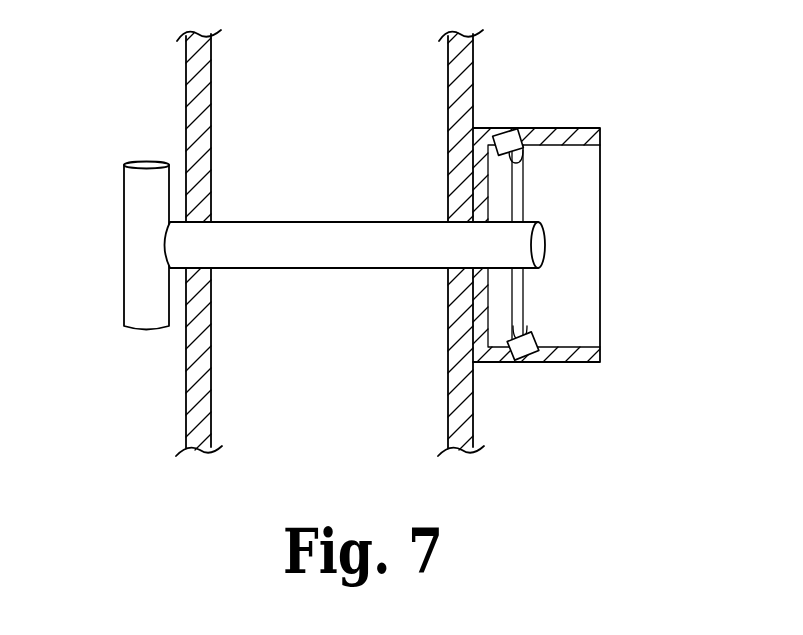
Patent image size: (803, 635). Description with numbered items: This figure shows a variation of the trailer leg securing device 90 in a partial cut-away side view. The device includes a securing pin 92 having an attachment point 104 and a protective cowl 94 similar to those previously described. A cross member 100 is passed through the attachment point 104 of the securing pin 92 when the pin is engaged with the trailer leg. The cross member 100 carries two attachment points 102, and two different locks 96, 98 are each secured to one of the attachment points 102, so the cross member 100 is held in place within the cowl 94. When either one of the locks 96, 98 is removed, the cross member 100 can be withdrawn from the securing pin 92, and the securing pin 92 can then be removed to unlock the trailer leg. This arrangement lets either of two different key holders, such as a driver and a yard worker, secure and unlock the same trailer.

The securing device 90 is at (645, 172).
The securing pin 92 is at (124, 200).
The protective cowl 94 is at (541, 128).
The lock 96 is at (528, 363).
The lock 98 is at (504, 131).
The cross member 100 is at (518, 200).
The attachment point 102 is at (521, 156).
The attachment point 104 is at (523, 268).